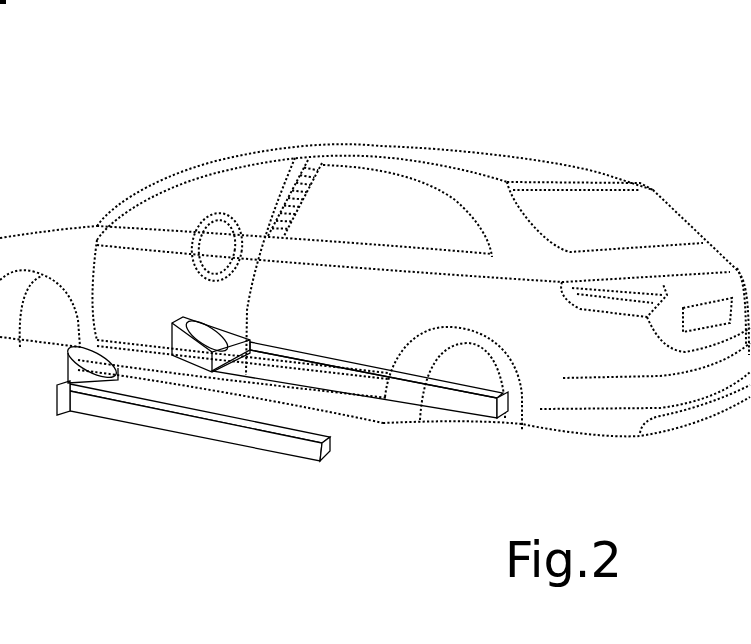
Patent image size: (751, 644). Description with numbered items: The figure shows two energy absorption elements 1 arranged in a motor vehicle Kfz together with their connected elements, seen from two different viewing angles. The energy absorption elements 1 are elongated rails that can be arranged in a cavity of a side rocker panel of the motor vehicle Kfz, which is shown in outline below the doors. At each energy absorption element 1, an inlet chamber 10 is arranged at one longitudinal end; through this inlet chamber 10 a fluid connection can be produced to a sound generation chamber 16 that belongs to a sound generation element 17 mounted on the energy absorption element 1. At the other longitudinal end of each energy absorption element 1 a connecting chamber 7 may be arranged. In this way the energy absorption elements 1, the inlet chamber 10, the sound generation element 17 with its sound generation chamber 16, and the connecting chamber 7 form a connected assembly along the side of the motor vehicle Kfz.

The energy absorption element 1 is at (337, 361).
The connecting chamber 7 is at (343, 449).
The inlet chamber 10 is at (260, 330).
The sound generation chamber 16 is at (195, 373).
The sound generation element 17 is at (99, 383).
The motor vehicle Kfz is at (247, 139).